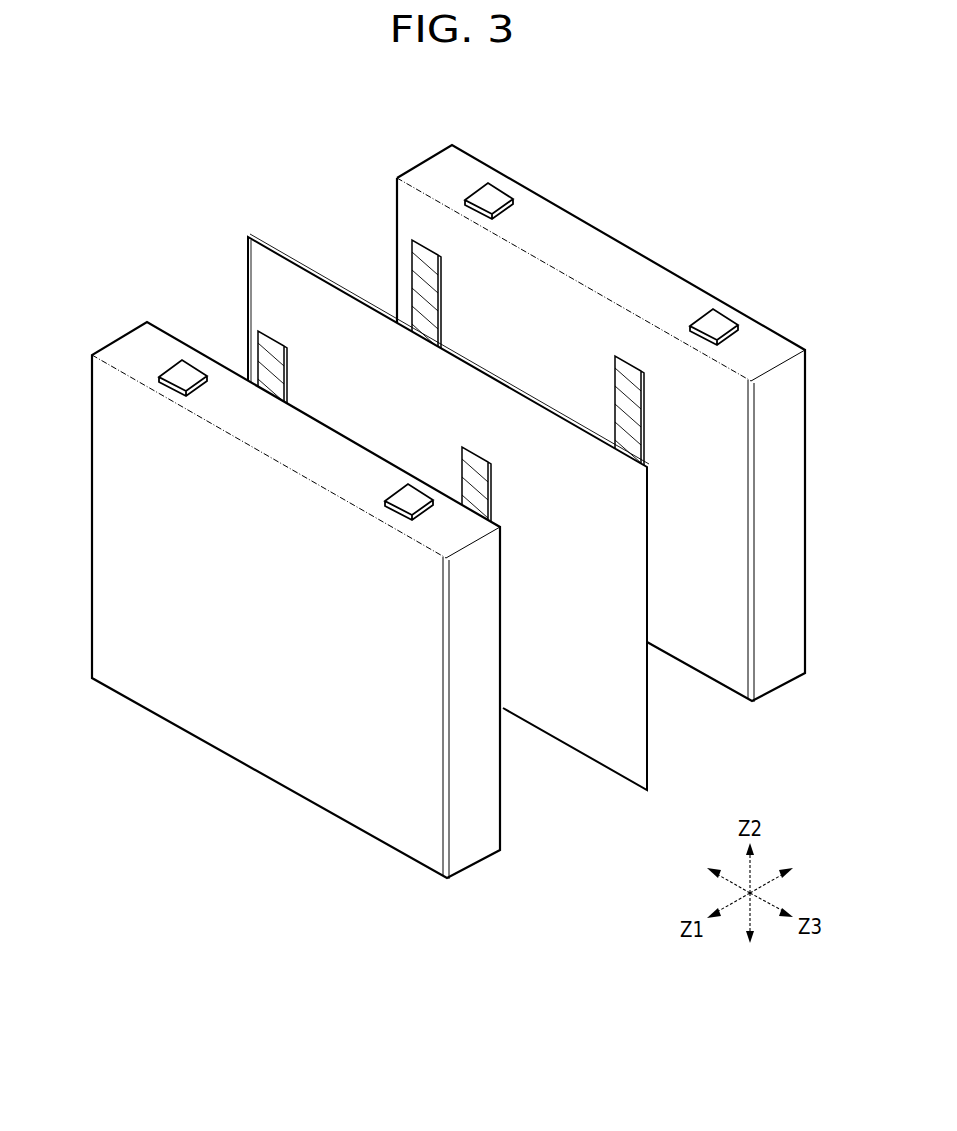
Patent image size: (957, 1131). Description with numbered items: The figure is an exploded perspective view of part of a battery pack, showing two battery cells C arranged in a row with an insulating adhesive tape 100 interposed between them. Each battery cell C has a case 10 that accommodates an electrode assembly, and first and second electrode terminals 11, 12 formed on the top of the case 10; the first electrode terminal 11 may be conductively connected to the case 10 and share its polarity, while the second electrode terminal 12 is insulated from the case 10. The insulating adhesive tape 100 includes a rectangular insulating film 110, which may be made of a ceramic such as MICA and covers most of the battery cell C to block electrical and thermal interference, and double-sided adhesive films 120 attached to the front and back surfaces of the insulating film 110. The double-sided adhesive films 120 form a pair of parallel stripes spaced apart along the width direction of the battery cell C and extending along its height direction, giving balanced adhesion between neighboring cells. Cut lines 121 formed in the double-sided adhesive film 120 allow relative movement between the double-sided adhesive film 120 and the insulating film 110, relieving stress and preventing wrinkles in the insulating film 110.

The case 10 is at (267, 760).
The first electrode terminal 11 is at (722, 322).
The second electrode terminal 12 is at (495, 190).
The insulating adhesive tape 100 is at (403, 468).
The insulating film 110 is at (248, 307).
The double-sided adhesive film 120 is at (451, 360).
The cut lines 121 is at (423, 303).
The battery cell C is at (775, 682).